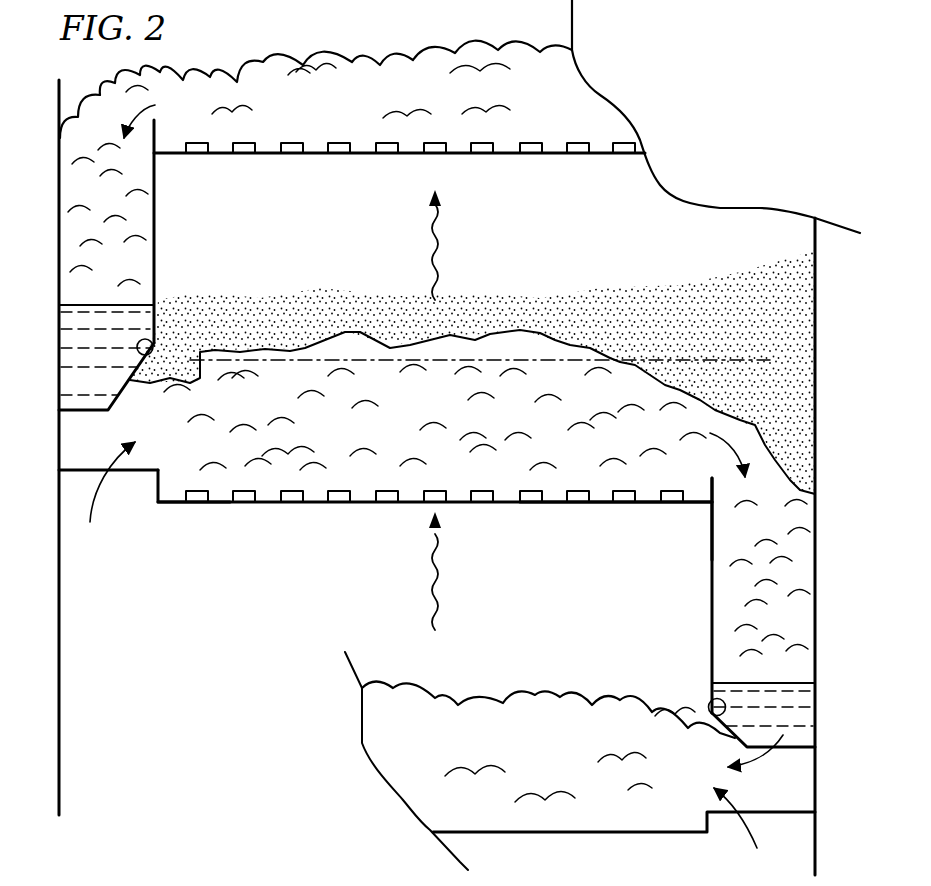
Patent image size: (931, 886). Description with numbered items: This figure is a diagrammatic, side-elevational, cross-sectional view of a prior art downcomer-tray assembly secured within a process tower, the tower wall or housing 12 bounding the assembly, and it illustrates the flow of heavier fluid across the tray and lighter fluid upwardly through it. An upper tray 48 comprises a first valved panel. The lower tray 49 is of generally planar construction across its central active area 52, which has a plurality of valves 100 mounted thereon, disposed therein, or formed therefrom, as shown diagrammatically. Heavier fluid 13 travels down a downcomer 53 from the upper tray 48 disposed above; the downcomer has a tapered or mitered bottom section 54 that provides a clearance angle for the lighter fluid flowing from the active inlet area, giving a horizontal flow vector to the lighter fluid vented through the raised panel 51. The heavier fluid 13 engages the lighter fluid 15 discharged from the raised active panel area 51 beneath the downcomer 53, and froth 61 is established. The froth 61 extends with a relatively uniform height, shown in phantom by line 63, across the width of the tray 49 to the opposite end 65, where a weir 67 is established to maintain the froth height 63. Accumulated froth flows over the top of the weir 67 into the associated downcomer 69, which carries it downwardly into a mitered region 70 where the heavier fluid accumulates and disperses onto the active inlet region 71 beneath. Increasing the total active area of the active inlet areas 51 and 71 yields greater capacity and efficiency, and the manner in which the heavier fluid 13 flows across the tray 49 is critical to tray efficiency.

The housing 12 is at (816, 306).
The heavier fluid 13 is at (100, 320).
The lighter fluid 15 is at (437, 220).
The upper tray 48 is at (555, 153).
The lower tray 49 is at (172, 504).
The raised active inlet panel 51 is at (74, 470).
The central active area 52 is at (265, 509).
The downcomer 53 is at (158, 135).
The tapered bottom section 54 is at (153, 345).
The froth 61 is at (258, 62).
The froth height line 63 is at (333, 335).
The opposite end 65 is at (553, 502).
The weir 67 is at (712, 480).
The downcomer 69 is at (710, 608).
The mitered region 70 is at (709, 699).
The active inlet region 71 is at (762, 812).
The valves 100 is at (336, 143).